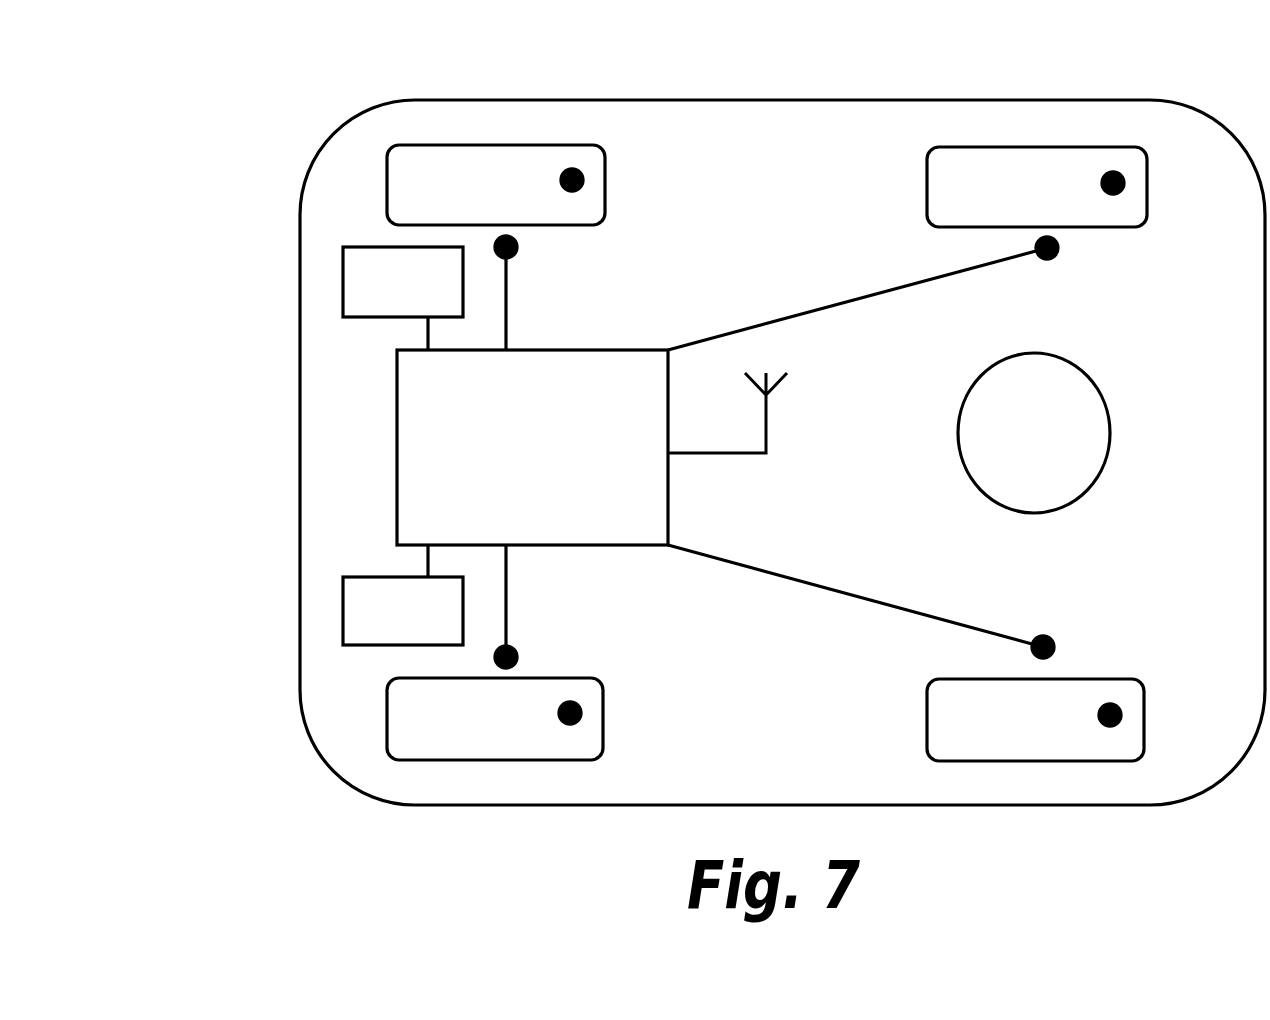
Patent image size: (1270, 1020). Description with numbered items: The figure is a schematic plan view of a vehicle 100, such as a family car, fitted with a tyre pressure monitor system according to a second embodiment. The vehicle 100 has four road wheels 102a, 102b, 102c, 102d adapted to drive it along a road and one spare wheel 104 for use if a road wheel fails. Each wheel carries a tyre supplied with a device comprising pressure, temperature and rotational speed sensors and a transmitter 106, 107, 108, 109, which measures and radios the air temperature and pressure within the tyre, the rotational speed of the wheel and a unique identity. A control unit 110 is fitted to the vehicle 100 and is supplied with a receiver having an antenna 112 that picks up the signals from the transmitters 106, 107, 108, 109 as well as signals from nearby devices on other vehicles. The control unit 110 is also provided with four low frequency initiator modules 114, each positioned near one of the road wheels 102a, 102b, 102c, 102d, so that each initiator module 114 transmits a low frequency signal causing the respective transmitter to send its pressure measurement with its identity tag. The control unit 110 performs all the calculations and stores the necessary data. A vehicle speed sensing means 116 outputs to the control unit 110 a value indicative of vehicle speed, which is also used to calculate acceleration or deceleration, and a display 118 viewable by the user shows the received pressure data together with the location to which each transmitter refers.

The vehicle 100 is at (300, 683).
The road wheel 102a is at (505, 145).
The road wheel 102b is at (1015, 147).
The road wheel 102c is at (503, 760).
The road wheel 102d is at (1034, 761).
The spare wheel 104 is at (1110, 433).
The transmitter 106 is at (584, 180).
The transmitter 107 is at (1125, 183).
The transmitter 108 is at (582, 713).
The transmitter 109 is at (1122, 715).
The control unit 110 is at (397, 443).
The antenna 112 is at (766, 423).
The initiator module 114 is at (518, 250).
The vehicle speed sensing means 116 is at (343, 277).
The display 118 is at (343, 613).